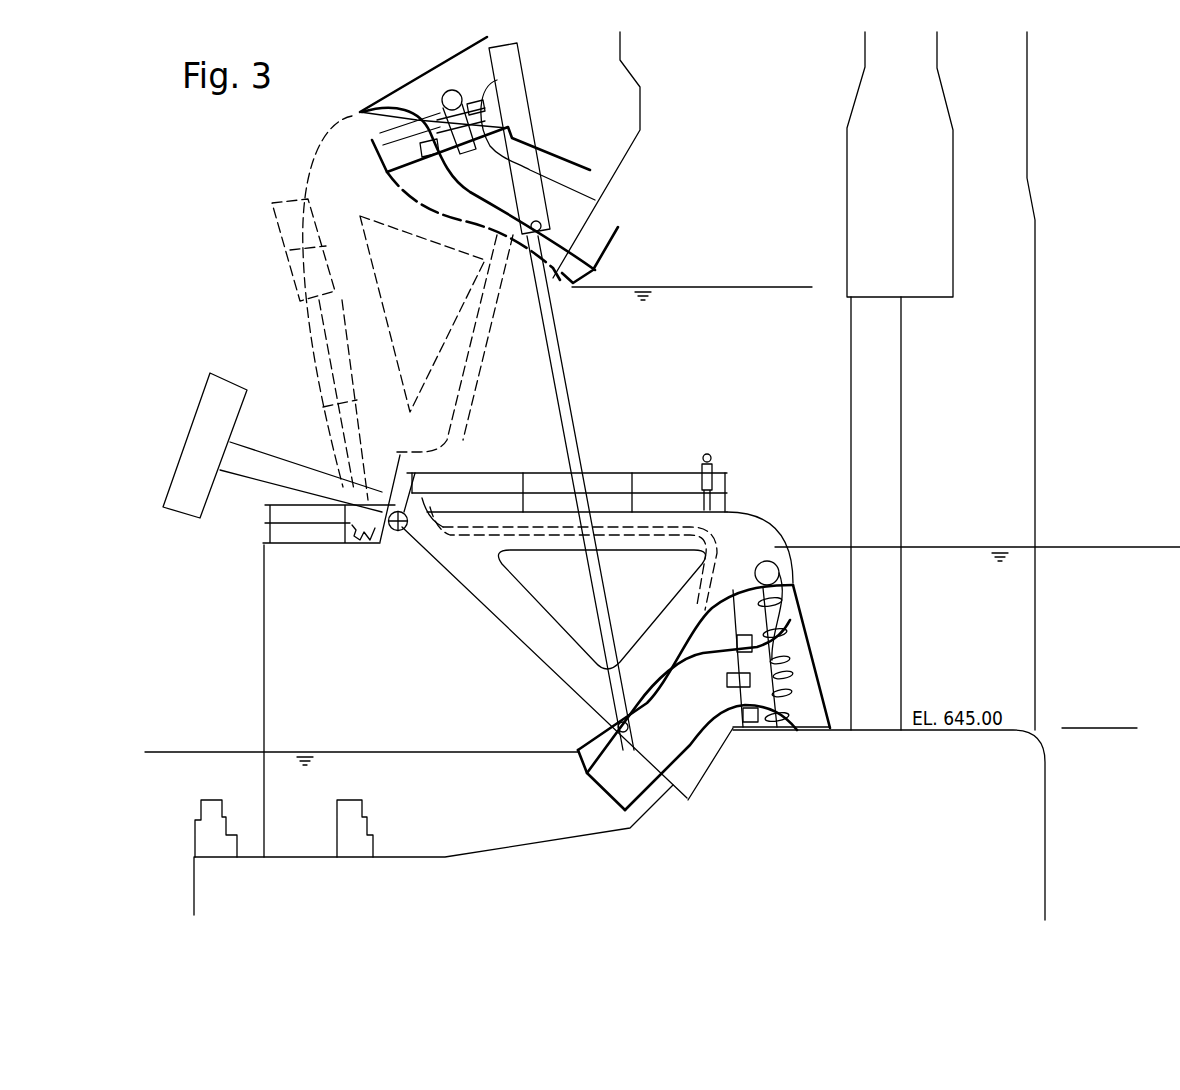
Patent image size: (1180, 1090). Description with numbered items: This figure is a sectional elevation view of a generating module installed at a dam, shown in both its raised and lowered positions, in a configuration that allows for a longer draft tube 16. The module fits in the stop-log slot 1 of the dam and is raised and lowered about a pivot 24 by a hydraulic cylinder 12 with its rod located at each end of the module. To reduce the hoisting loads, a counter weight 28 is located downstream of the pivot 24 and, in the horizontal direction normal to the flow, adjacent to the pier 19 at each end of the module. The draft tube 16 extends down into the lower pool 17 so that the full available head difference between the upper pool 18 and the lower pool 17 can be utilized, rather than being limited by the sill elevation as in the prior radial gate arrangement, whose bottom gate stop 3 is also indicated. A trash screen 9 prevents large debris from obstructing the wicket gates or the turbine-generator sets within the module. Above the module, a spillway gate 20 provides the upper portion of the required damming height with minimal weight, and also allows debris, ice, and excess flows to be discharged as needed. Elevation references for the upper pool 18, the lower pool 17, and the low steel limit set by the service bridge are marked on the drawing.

The stop-log slot 1 is at (880, 384).
The bottom gate stop 3 is at (677, 797).
The trash screen 9 is at (814, 634).
The hydraulic cylinder 12 is at (565, 360).
The draft tube 16 is at (624, 768).
The lower pool 17 is at (185, 752).
The upper pool 18 is at (913, 547).
The pier 19 is at (745, 384).
The spillway gate 20 is at (760, 538).
The pivot 24 is at (390, 535).
The counter weight 28 is at (216, 456).